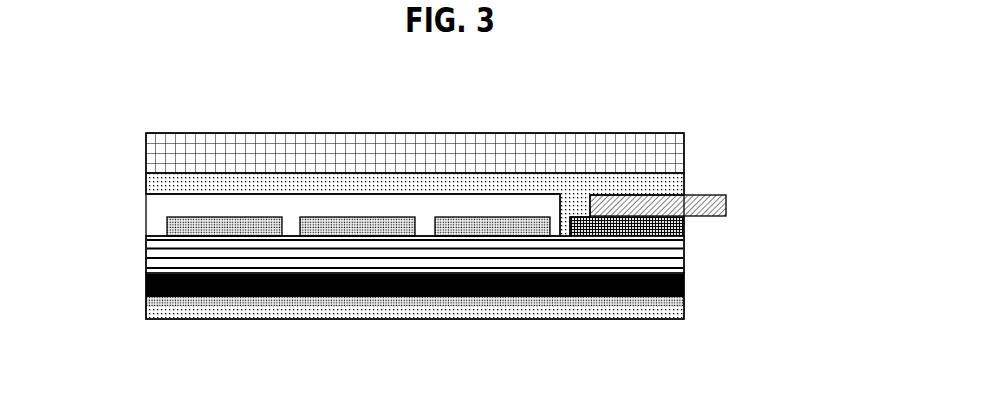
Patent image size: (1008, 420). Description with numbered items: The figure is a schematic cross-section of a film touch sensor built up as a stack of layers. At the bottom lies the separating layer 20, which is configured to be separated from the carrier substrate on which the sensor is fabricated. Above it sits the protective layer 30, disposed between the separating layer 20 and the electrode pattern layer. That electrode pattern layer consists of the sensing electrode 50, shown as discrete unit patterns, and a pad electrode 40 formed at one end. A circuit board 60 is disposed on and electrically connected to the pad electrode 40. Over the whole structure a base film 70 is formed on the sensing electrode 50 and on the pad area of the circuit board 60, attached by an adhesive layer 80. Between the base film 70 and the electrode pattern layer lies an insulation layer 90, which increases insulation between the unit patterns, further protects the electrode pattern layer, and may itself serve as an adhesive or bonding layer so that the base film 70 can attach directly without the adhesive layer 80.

The separating layer 20 is at (507, 308).
The protective layer 30 is at (684, 260).
The pad electrode 40 is at (684, 227).
The sensing electrode 50 is at (195, 225).
The circuit board 60 is at (727, 205).
The base film 70 is at (548, 153).
The adhesive layer 80 is at (667, 183).
The insulation layer 90 is at (210, 207).